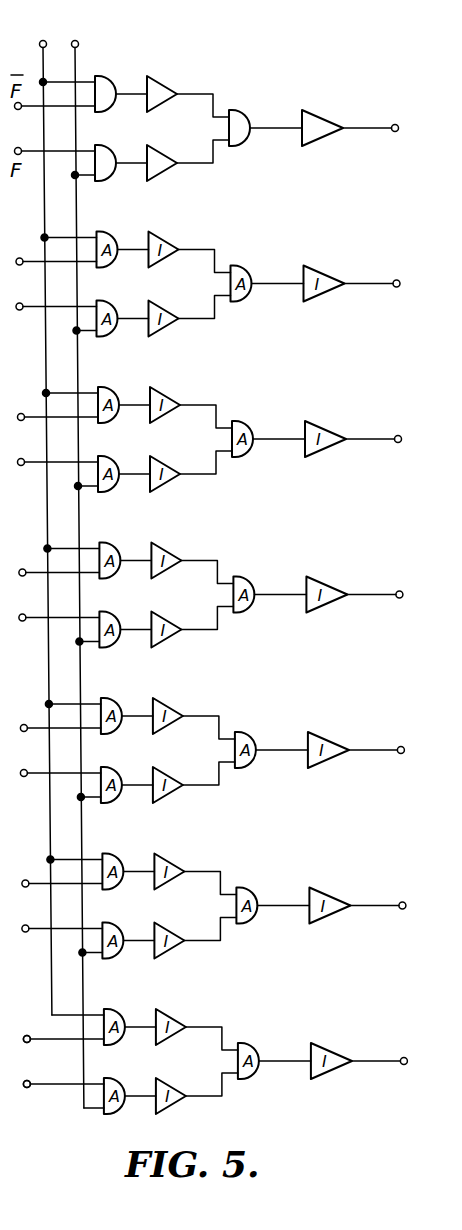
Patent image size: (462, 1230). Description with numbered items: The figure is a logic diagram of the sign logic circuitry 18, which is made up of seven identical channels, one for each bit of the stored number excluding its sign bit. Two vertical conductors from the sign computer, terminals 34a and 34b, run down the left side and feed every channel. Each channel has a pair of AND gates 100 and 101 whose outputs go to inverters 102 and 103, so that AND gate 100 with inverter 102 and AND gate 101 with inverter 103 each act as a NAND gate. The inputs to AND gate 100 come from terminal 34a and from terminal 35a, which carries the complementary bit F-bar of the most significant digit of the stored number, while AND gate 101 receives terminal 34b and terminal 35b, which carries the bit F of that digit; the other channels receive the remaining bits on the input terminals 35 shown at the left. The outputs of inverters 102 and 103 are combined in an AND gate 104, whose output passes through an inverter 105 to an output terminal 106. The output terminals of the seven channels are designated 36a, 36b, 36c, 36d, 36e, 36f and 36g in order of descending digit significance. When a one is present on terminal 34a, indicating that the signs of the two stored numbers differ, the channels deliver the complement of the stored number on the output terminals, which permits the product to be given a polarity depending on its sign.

The sign logic circuitry 18 is at (243, 81).
The terminal 34a is at (46, 41).
The terminal 34b is at (78, 42).
The input terminals 35 is at (19, 1064).
The terminal 35a is at (33, 108).
The terminal 35b is at (31, 153).
The AND gate 100 is at (106, 77).
The AND gate 101 is at (100, 181).
The inverter 102 is at (165, 77).
The inverter 103 is at (165, 180).
The AND gate 104 is at (236, 111).
The inverter 105 is at (320, 111).
The output terminal 106 is at (388, 127).
The output terminal 36a is at (394, 132).
The output terminal 36b is at (397, 280).
The output terminal 36c is at (402, 421).
The output terminal 36d is at (400, 590).
The output terminal 36e is at (406, 731).
The output terminal 36f is at (404, 902).
The output terminal 36g is at (415, 1046).